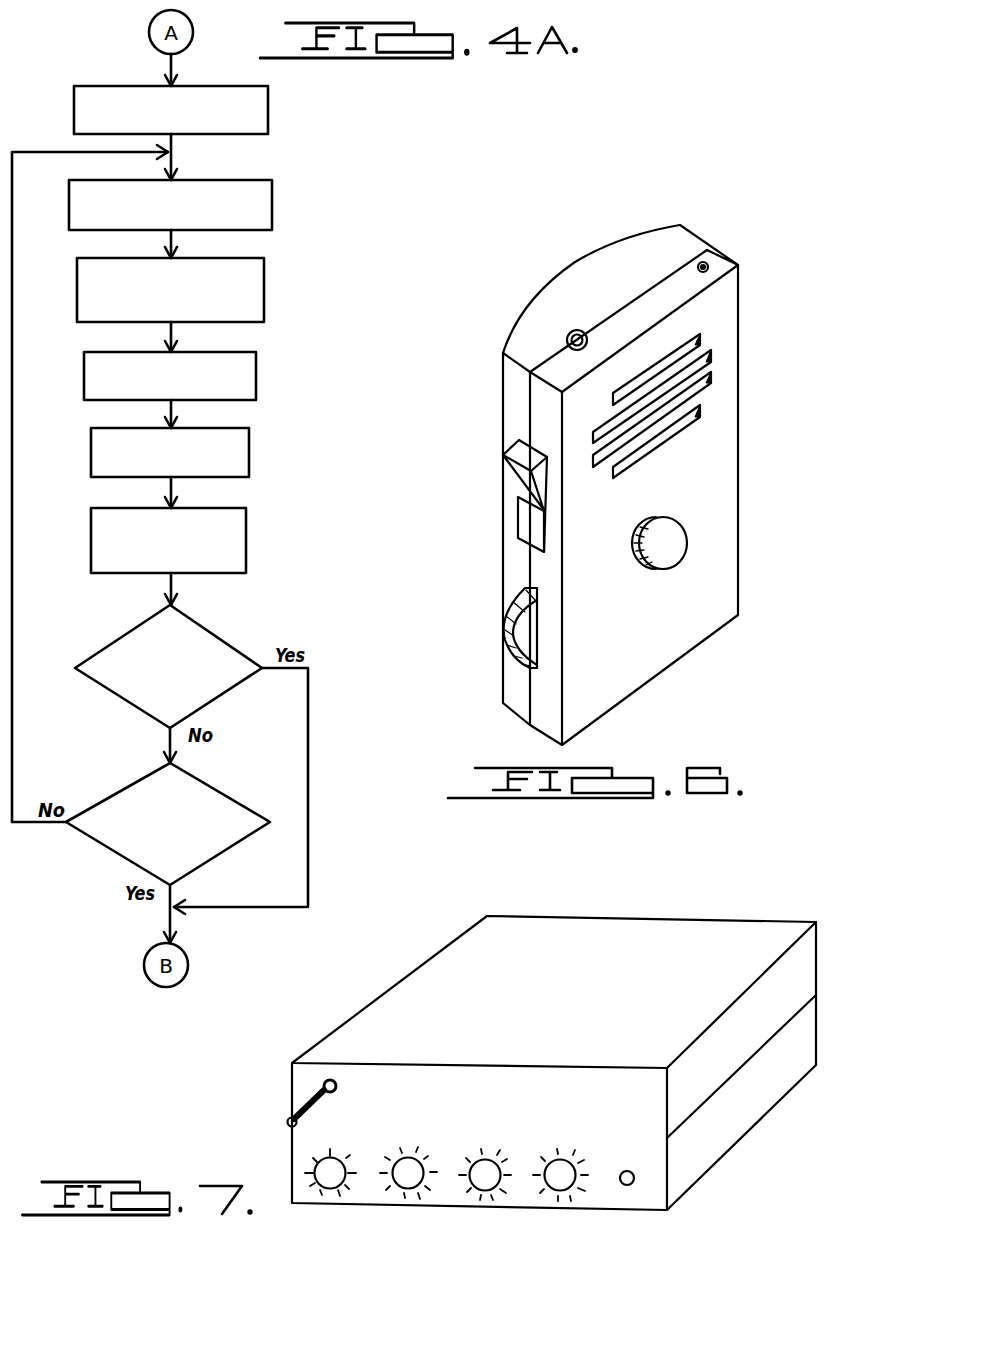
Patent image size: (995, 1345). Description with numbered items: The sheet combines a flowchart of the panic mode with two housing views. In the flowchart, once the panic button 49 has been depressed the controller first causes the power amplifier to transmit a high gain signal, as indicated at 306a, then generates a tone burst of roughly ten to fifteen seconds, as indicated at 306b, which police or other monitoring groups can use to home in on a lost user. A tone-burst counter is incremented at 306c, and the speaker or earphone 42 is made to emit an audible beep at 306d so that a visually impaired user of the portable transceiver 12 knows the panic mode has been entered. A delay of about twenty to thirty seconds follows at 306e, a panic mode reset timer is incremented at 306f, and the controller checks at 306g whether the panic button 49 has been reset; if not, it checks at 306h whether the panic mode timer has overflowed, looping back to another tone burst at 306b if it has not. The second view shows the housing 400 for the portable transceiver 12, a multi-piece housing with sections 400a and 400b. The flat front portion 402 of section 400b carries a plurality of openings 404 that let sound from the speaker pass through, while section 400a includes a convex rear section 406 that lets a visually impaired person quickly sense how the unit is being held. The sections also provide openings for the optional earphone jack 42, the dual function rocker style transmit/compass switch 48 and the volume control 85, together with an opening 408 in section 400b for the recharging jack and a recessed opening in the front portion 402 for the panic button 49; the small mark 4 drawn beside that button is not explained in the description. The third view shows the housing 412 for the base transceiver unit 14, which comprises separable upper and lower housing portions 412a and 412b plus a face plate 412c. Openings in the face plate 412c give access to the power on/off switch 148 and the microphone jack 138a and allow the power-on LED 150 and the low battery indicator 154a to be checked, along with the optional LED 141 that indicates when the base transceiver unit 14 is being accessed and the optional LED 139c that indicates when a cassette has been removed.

In FIG. 4A, the high gain transmit step 306a is at (98, 86).
In FIG. 4A, the tone-burst generation step 306b is at (270, 194).
In FIG. 4A, the tone-burst counter increment step 306c is at (264, 278).
In FIG. 4A, the audible beep step 306d is at (250, 376).
In FIG. 4A, the time delay step 306e is at (238, 456).
In FIG. 4A, the panic mode reset timer increment step 306f is at (238, 540).
In FIG. 4A, the panic button reset check 306g is at (90, 665).
In FIG. 4A, the panic mode timer overflow check 306h is at (245, 815).
In FIG. 6, the portable radio frequency transceiver 12 is at (608, 198).
In FIG. 6, the housing 400 is at (556, 272).
In FIG. 6, the housing section 400a is at (662, 250).
In FIG. 6, the housing section 400b is at (722, 262).
In FIG. 6, the front portion 402 is at (715, 510).
In FIG. 6, the openings 404 is at (700, 340).
In FIG. 6, the rear section 406 is at (528, 300).
In FIG. 6, the opening 408 is at (709, 262).
In FIG. 6, the earphone jack 42 is at (584, 331).
In FIG. 6, the rocker style transmit/compass switch 48 is at (520, 478).
In FIG. 6, the volume control 85 is at (505, 628).
In FIG. 6, the panic button 49 is at (655, 564).
In FIG. 6, the knurled edge of knob 4 is at (636, 545).
In FIG. 7, the base transceiver unit 14 is at (226, 1072).
In FIG. 7, the housing 412 is at (555, 1067).
In FIG. 7, the upper housing portion 412a is at (732, 935).
In FIG. 7, the lower housing portion 412b is at (763, 1097).
In FIG. 7, the face plate 412c is at (650, 1200).
In FIG. 7, the power on/off switch 148 is at (313, 1100).
In FIG. 7, the power-on LED 150 is at (330, 1183).
In FIG. 7, the low battery indicator 154a is at (408, 1183).
In FIG. 7, the optional LED 141 is at (483, 1185).
In FIG. 7, the optional LED 139c is at (565, 1187).
In FIG. 7, the microphone jack 138a is at (623, 1173).